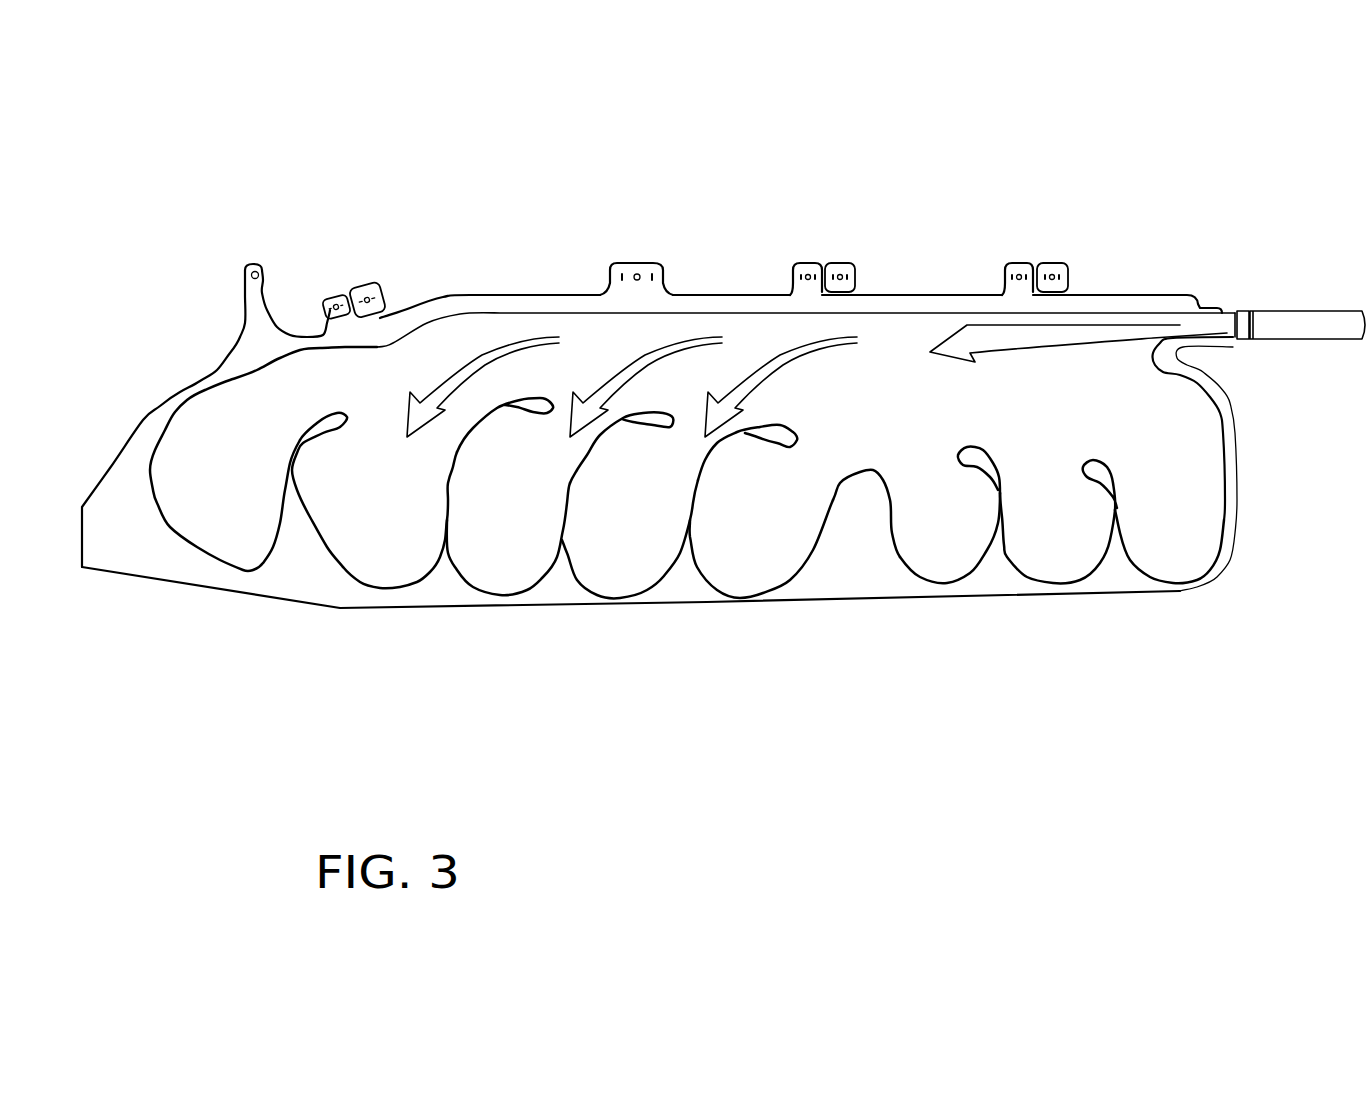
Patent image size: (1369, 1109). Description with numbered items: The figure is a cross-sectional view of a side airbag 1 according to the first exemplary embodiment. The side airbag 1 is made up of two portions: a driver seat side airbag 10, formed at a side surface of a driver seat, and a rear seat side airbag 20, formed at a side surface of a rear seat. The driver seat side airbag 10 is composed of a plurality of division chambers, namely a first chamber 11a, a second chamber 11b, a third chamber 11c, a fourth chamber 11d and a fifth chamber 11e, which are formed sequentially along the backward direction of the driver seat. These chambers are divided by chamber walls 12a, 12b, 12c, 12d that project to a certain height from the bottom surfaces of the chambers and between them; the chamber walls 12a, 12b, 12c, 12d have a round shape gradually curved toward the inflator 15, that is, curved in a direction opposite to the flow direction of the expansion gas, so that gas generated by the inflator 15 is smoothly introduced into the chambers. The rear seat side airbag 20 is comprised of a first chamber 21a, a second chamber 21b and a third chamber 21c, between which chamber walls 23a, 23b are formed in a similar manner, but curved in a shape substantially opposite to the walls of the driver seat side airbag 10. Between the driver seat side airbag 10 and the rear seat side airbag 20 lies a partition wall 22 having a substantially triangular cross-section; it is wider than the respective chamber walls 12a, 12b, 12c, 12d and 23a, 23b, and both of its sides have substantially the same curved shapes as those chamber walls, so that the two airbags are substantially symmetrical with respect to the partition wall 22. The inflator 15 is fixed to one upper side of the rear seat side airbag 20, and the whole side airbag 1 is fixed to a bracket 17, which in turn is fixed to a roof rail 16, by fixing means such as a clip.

The side airbag 1 is at (1037, 730).
The driver seat side airbag 10 is at (517, 595).
The first chamber 11a is at (220, 506).
The second chamber 11b is at (372, 543).
The third chamber 11c is at (498, 570).
The fourth chamber 11d is at (627, 573).
The fifth chamber 11e is at (740, 567).
The chamber wall 12a is at (292, 450).
The chamber wall 12b is at (450, 468).
The chamber wall 12c is at (568, 492).
The chamber wall 12d is at (700, 471).
The inflator 15 is at (1308, 315).
The roof rail 16 is at (933, 305).
The bracket 17 is at (260, 288).
The rear seat side airbag 20 is at (920, 590).
The first chamber 21a is at (937, 565).
The second chamber 21b is at (1053, 563).
The third chamber 21c is at (1170, 557).
The partition wall 22 is at (867, 499).
The chamber wall 23a is at (997, 497).
The chamber wall 23b is at (1116, 527).